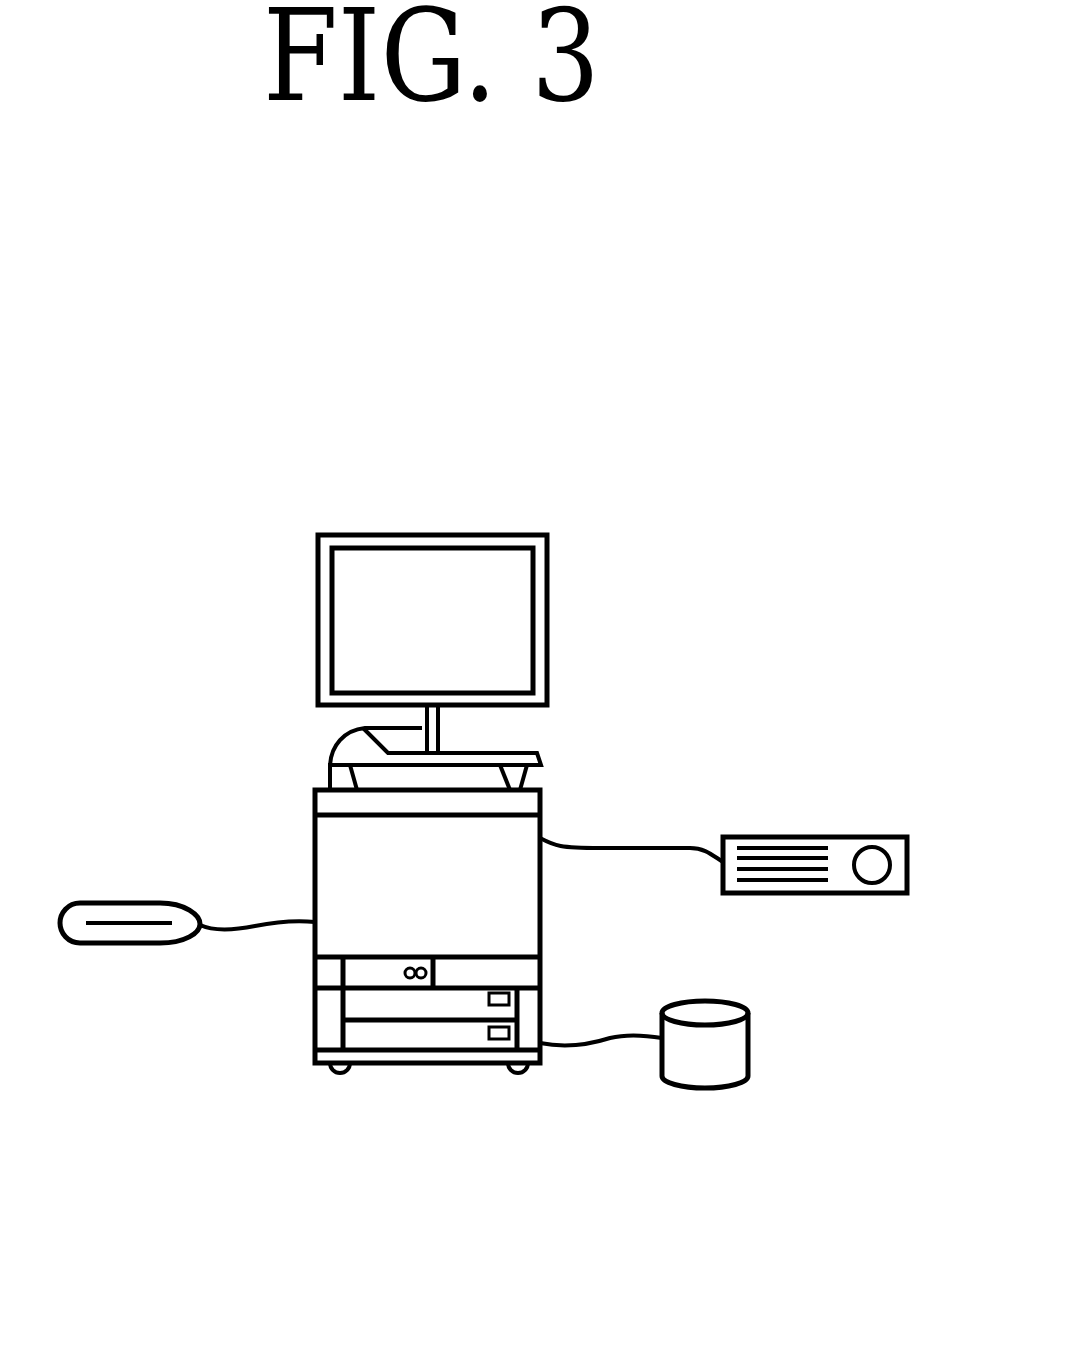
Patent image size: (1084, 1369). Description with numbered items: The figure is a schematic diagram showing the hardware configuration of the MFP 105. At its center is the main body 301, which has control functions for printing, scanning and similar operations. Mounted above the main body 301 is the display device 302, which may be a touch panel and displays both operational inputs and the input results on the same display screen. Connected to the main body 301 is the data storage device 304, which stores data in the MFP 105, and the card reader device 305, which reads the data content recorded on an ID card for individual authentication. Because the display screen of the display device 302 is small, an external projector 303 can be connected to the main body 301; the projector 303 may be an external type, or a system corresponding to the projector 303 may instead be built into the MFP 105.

The MFP 105 is at (328, 1150).
The main body 301 is at (315, 836).
The display device 302 is at (445, 535).
The projector 303 is at (873, 840).
The data storage device 304 is at (706, 1090).
The card reader device 305 is at (125, 945).